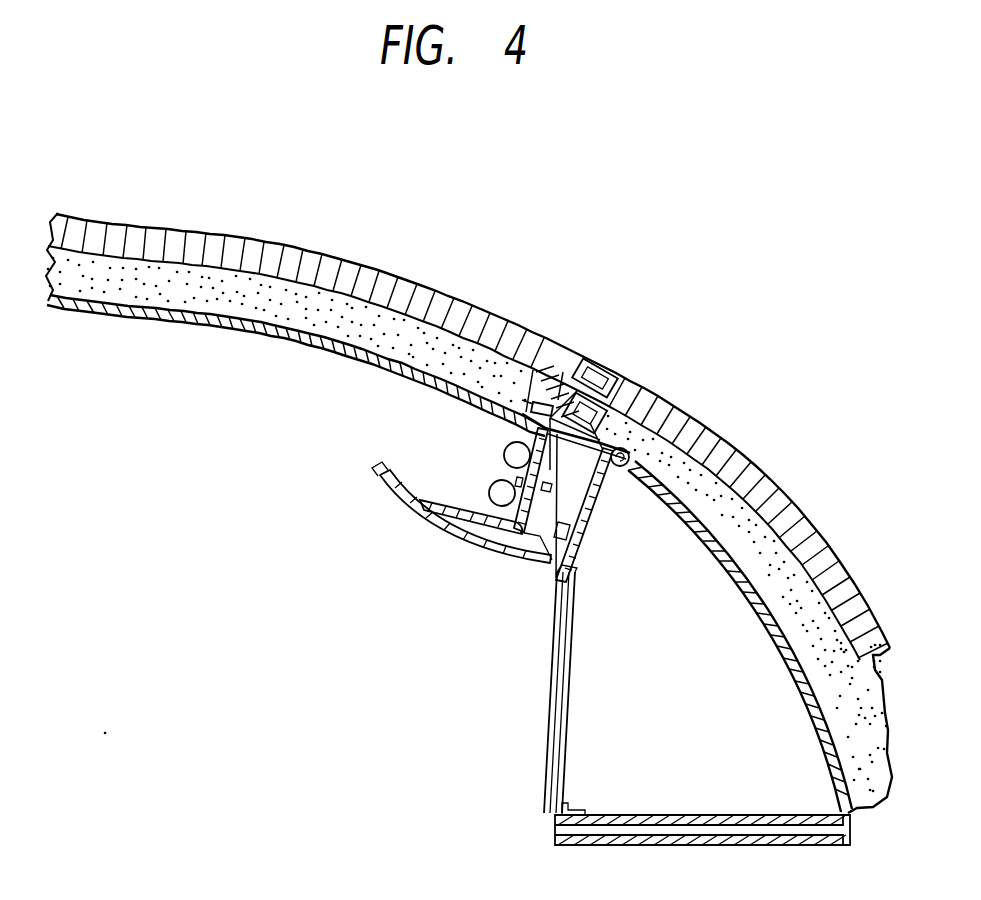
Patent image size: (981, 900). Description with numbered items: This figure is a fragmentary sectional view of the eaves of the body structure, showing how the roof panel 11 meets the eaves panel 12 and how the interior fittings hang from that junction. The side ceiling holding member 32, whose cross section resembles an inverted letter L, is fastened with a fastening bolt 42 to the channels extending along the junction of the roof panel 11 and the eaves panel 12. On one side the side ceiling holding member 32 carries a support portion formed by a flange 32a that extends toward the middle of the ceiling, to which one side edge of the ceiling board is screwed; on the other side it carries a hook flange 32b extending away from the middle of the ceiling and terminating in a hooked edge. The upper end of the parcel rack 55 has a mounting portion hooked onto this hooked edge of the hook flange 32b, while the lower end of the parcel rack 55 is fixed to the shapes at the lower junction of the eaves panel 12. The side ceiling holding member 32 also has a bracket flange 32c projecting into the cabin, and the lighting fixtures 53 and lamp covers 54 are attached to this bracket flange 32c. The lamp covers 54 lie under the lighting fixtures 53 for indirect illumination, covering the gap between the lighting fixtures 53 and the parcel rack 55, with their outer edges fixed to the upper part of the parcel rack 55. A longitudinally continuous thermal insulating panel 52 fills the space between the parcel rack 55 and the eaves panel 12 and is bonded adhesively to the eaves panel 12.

The roof panel 11 is at (368, 272).
The eaves panel 12 is at (712, 440).
The thermal insulating panel 52 is at (452, 343).
The side ceiling holding member 32 is at (562, 360).
The flange 32a is at (536, 428).
The hook flange 32b is at (657, 404).
The bracket flange 32c is at (510, 545).
The fastening bolt 42 is at (592, 372).
The lighting fixtures 53 is at (500, 482).
The lamp covers 54 is at (420, 526).
The parcel rack 55 is at (544, 758).